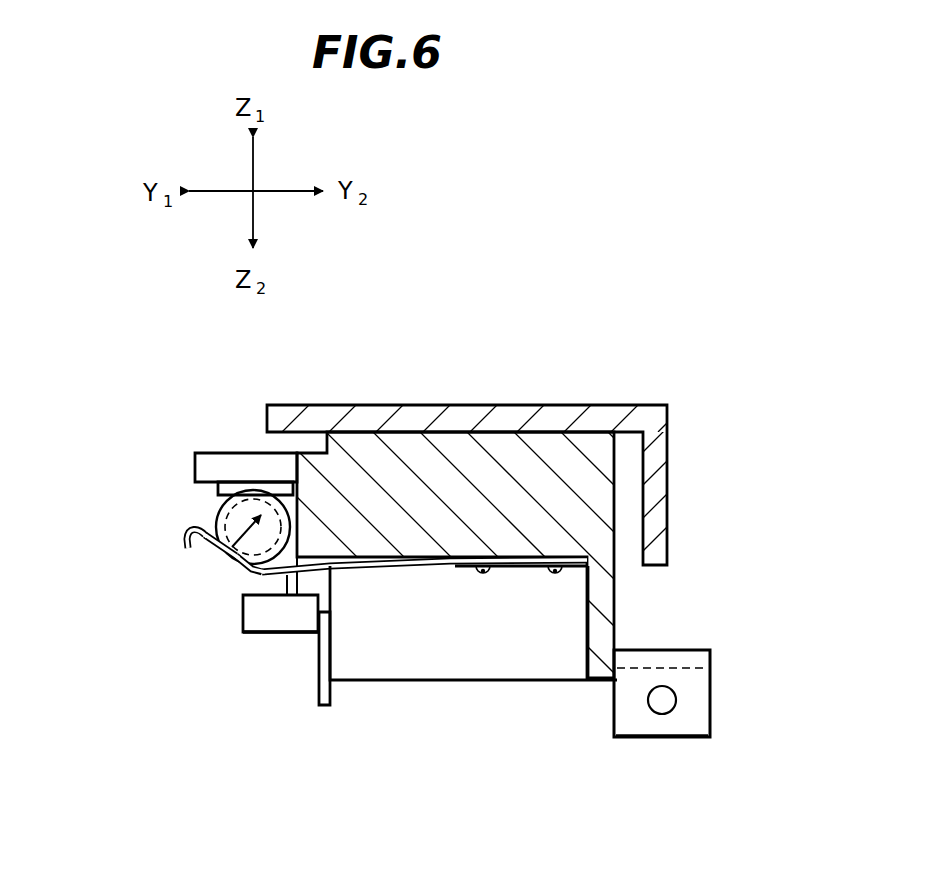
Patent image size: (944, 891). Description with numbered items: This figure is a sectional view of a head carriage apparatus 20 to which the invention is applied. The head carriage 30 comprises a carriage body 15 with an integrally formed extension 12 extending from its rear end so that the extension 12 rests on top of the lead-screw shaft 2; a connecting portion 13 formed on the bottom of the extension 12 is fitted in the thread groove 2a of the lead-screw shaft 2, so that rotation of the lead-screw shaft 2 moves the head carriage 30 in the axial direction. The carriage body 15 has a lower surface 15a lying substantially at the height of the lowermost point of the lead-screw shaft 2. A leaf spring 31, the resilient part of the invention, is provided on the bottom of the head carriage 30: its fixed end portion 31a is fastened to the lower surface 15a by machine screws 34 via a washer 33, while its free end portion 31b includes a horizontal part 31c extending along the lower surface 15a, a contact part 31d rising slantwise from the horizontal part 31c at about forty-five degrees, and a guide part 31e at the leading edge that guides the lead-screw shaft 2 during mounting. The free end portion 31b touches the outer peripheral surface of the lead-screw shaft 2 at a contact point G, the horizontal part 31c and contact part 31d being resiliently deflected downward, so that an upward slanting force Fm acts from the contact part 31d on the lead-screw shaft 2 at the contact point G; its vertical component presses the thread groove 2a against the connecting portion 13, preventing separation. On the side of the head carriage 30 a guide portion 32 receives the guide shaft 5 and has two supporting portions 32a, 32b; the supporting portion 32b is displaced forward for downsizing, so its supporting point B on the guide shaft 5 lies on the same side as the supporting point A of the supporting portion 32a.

The lead-screw shaft 2 is at (213, 515).
The thread groove 2a is at (218, 510).
The guide shaft 5 is at (677, 697).
The extension 12 is at (250, 475).
The connecting portion 13 is at (213, 467).
The carriage body 15 is at (365, 438).
The lower surface 15a is at (352, 658).
The head carriage apparatus 20 is at (613, 146).
The head carriage 30 is at (500, 402).
The leaf spring 31 is at (331, 658).
The fixed end portion 31a is at (530, 555).
The free end portion 31b is at (331, 658).
The horizontal part 31c is at (297, 568).
The contact part 31d is at (247, 571).
The guide part 31e is at (145, 650).
The guide portion 32 is at (687, 650).
The supporting portion 32a is at (690, 755).
The supporting portion 32b is at (667, 732).
The washer 33 is at (452, 573).
The machine screws 34 is at (547, 575).
The supporting point B is at (660, 687).
The supporting point A is at (710, 580).
The contact point G is at (213, 548).
The slanting force Fm is at (254, 533).